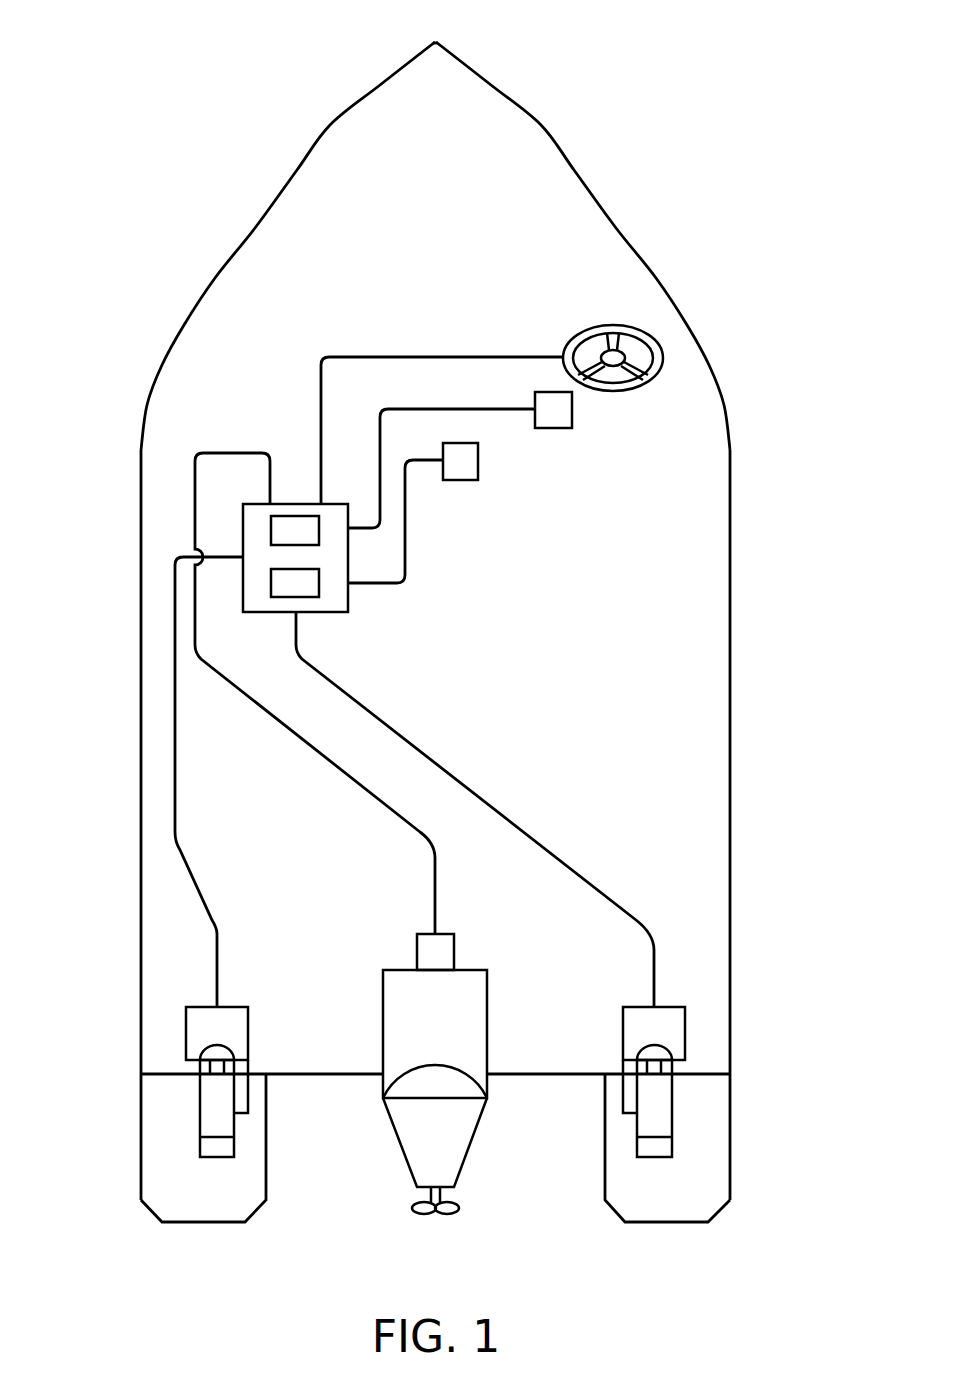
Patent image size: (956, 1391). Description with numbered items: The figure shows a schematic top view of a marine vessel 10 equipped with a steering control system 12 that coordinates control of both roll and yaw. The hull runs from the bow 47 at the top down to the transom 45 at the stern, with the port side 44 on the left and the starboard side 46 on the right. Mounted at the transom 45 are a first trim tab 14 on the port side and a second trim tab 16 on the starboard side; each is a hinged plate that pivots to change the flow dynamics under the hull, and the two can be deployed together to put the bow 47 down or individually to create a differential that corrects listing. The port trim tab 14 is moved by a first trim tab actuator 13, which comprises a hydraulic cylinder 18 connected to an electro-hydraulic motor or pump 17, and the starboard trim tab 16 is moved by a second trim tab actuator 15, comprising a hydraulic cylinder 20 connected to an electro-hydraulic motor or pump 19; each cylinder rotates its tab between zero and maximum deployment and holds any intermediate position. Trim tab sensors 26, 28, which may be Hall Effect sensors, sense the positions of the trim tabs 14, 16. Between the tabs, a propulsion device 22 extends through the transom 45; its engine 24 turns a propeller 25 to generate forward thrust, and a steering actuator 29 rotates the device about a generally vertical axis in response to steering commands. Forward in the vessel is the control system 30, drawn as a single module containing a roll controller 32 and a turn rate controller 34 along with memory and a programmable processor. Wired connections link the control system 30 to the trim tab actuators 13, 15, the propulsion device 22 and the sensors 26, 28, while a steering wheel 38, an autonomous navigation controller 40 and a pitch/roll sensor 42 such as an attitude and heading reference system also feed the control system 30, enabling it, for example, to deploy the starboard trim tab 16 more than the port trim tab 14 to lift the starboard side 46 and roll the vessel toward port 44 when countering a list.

The marine vessel 10 is at (434, 636).
The steering control system 12 is at (424, 626).
The trim tab actuator 13 is at (205, 1061).
The trim tab 14 is at (183, 1223).
The trim tab actuator 15 is at (664, 1061).
The trim tab 16 is at (688, 1223).
The electro-hydraulic motor or pump 17 is at (248, 1022).
The hydraulic cylinder 18 is at (212, 1120).
The electro-hydraulic motor or pump 19 is at (622, 1021).
The hydraulic cylinder 20 is at (659, 1121).
The propulsion device 22 is at (454, 1071).
The engine 24 is at (467, 1032).
The propeller 25 is at (438, 1216).
The trim tab sensor 26 is at (242, 1102).
The trim tab sensor 28 is at (630, 1102).
The steering actuator 29 is at (454, 952).
The control system 30 is at (321, 582).
The roll controller 32 is at (319, 538).
The turn rate controller 34 is at (319, 590).
The steering wheel 38 is at (643, 382).
The autonomous navigation controller 40 is at (557, 428).
The pitch/roll sensor 42 is at (462, 480).
The port side 44 is at (118, 584).
The transom 45 is at (532, 1077).
The starboard side 46 is at (752, 582).
The bow 47 is at (435, 40).